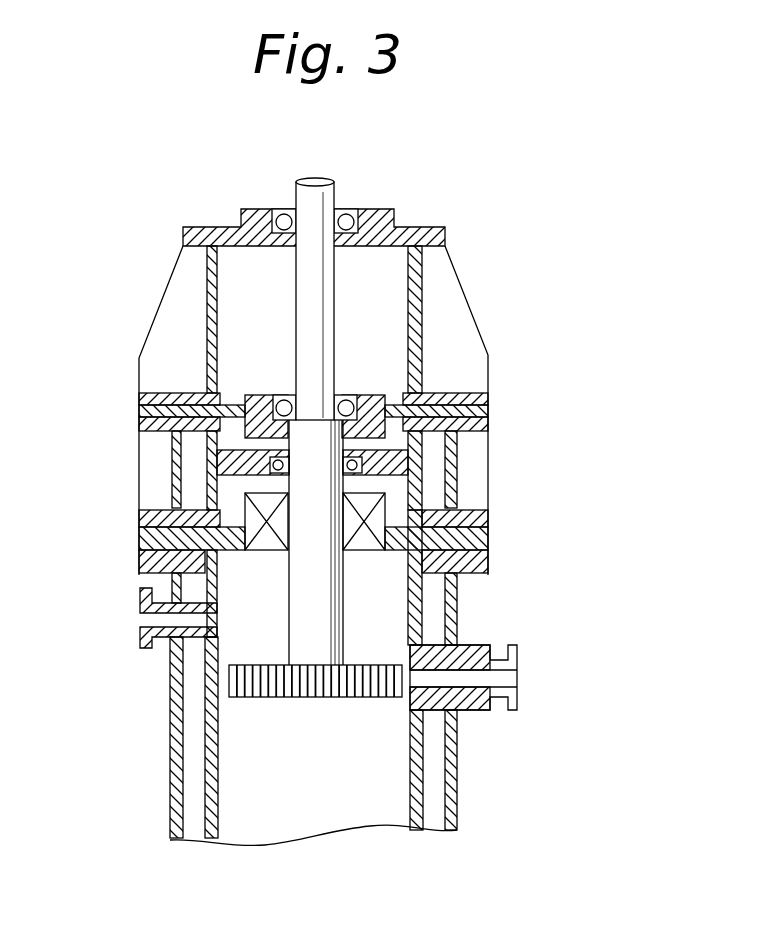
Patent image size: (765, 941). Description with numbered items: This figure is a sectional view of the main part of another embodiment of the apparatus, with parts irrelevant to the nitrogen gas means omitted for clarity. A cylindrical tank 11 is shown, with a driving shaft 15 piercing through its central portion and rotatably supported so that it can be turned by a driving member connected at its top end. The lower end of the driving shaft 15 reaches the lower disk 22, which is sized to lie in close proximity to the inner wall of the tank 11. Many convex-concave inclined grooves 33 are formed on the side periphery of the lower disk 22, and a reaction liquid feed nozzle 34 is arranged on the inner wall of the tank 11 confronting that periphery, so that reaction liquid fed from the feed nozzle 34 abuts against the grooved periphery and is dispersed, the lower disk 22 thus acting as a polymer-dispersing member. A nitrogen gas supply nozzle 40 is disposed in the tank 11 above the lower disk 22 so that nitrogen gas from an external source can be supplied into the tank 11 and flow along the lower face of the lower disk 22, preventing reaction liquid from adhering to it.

The tank 11 is at (205, 778).
The driving shaft 15 is at (314, 478).
The lower disk 22 is at (372, 662).
The convex-concave inclined grooves 33 is at (229, 685).
The reaction liquid feed nozzle 34 is at (518, 652).
The nitrogen gas supply nozzle 40 is at (140, 604).